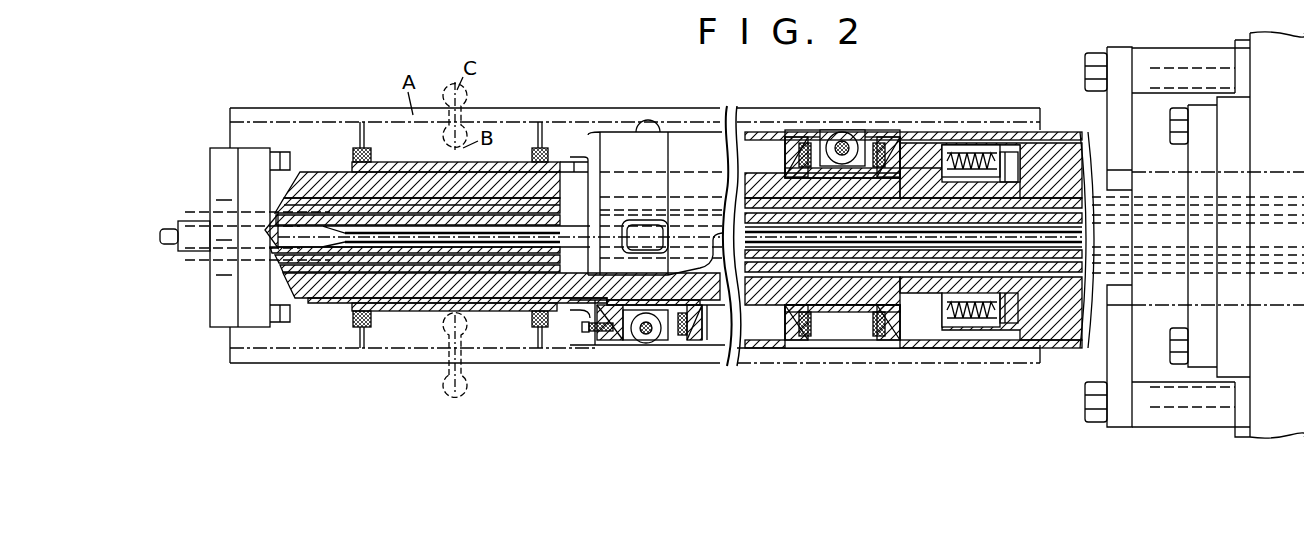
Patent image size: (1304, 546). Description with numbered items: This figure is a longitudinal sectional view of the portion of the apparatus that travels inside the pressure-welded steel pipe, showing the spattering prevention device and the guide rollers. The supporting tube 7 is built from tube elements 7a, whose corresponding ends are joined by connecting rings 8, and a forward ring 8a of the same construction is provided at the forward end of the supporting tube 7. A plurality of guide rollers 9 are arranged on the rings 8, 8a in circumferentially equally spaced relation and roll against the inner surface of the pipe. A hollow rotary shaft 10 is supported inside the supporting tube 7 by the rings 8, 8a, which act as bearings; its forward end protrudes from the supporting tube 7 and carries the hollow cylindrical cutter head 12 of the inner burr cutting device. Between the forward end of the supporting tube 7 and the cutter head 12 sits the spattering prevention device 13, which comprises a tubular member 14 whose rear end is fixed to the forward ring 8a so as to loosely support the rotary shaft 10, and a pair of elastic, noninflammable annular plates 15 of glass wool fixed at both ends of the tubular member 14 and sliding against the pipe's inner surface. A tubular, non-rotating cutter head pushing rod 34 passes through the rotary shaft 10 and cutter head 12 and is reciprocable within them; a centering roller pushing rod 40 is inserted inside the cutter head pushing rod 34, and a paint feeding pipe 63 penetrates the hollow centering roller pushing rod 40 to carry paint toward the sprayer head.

The supporting tube 7 is at (1098, 330).
The tube elements 7a is at (764, 342).
The connecting rings 8 is at (890, 338).
The forward ring 8a is at (611, 340).
The guide rollers 9 is at (647, 128).
The hollow rotary shaft 10 is at (316, 186).
The cutter head 12 is at (221, 328).
The spattering prevention device 13 is at (431, 328).
The tubular member 14 is at (507, 311).
The annular plates 15 is at (362, 330).
The cutter head pushing rod 34 is at (322, 268).
The centering roller pushing rod 40 is at (343, 256).
The paint feeding pipe 63 is at (168, 232).